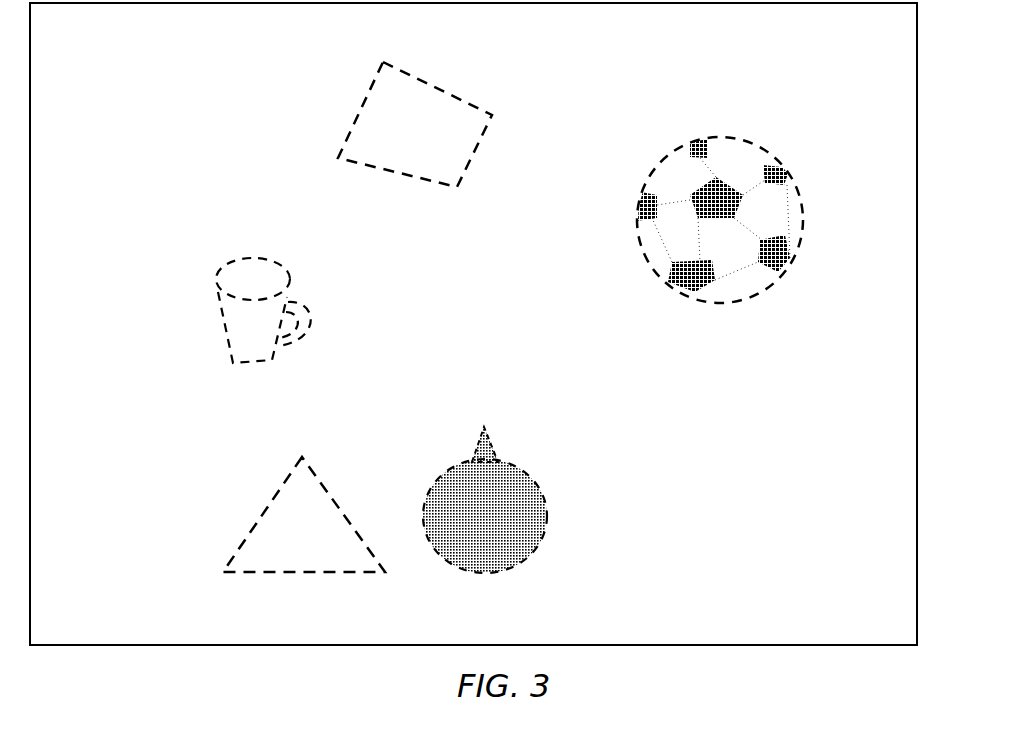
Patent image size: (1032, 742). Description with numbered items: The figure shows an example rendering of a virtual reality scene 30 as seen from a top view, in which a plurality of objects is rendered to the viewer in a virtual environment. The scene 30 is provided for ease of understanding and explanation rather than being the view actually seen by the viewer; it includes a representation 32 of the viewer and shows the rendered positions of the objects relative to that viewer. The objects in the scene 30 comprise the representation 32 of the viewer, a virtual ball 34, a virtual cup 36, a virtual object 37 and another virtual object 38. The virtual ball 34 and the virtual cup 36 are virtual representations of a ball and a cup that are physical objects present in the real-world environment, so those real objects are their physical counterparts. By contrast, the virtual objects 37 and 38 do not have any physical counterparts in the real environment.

The virtual reality scene 30 is at (781, 511).
The representation of the viewer 32 is at (545, 522).
The virtual ball 34 is at (748, 297).
The virtual cup 36 is at (272, 360).
The virtual object 37 is at (457, 188).
The virtual object 38 is at (357, 573).